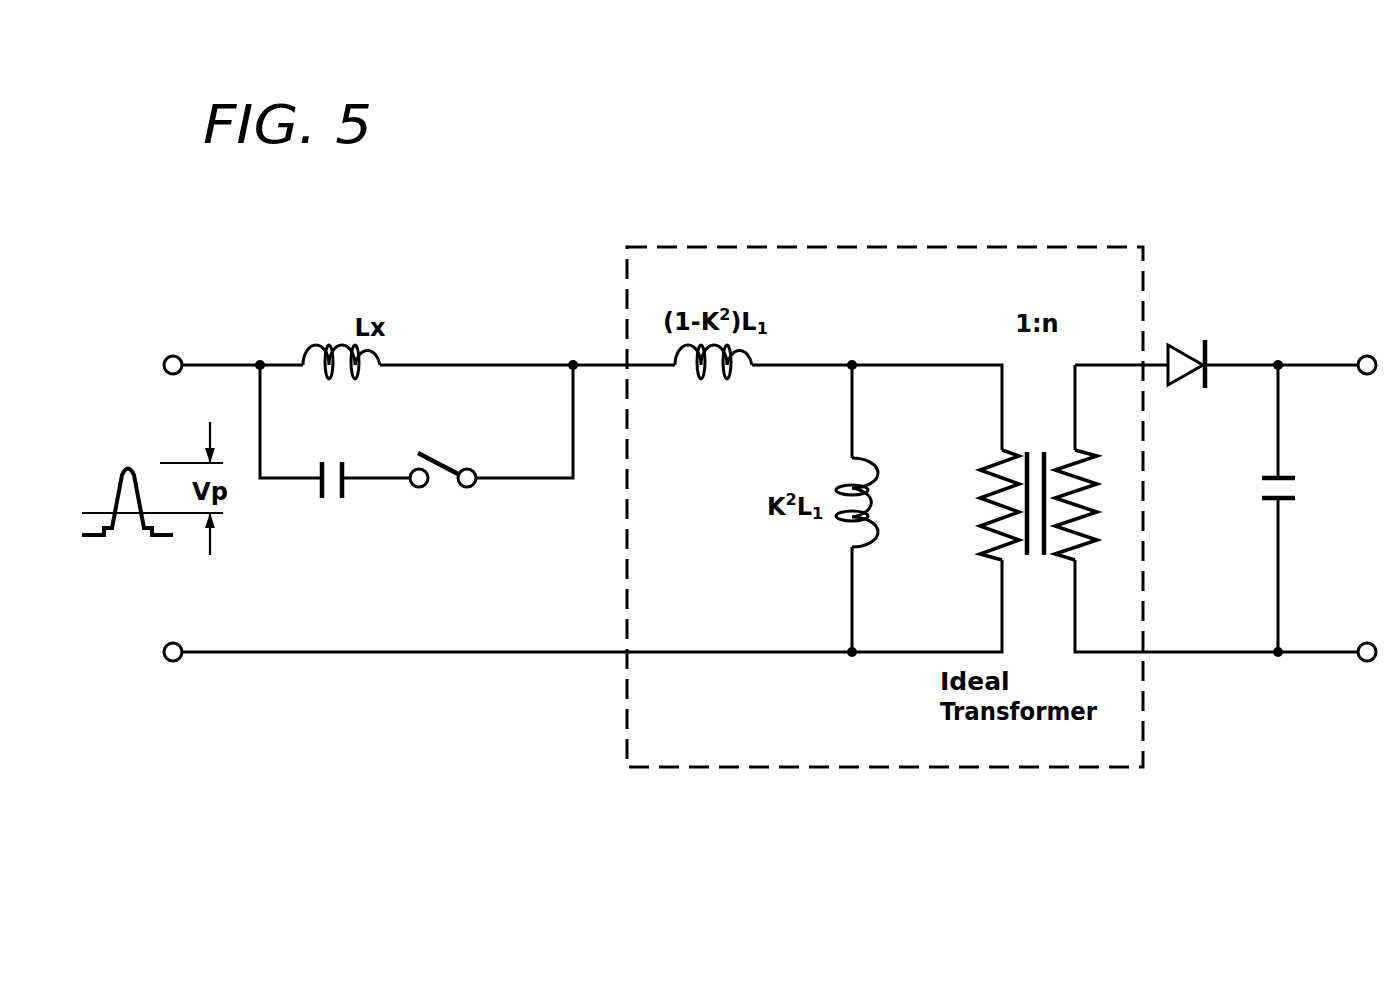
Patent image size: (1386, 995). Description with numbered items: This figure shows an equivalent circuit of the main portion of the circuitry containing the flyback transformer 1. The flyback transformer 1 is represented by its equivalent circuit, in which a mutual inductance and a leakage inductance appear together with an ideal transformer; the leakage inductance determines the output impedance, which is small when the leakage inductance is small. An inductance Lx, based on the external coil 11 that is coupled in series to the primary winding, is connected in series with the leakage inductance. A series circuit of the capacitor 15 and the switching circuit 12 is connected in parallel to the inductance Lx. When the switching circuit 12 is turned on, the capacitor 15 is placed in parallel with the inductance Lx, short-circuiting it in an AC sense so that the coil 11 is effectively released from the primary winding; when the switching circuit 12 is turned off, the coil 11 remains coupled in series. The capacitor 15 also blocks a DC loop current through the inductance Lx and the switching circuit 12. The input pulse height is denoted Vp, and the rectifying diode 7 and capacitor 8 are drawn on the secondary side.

The flyback transformer 1 is at (782, 768).
The diode 7 is at (1183, 343).
The capacitor 8 is at (1297, 493).
The external coil 11 is at (330, 341).
The switching circuit 12 is at (443, 487).
The capacitor 15 is at (332, 494).